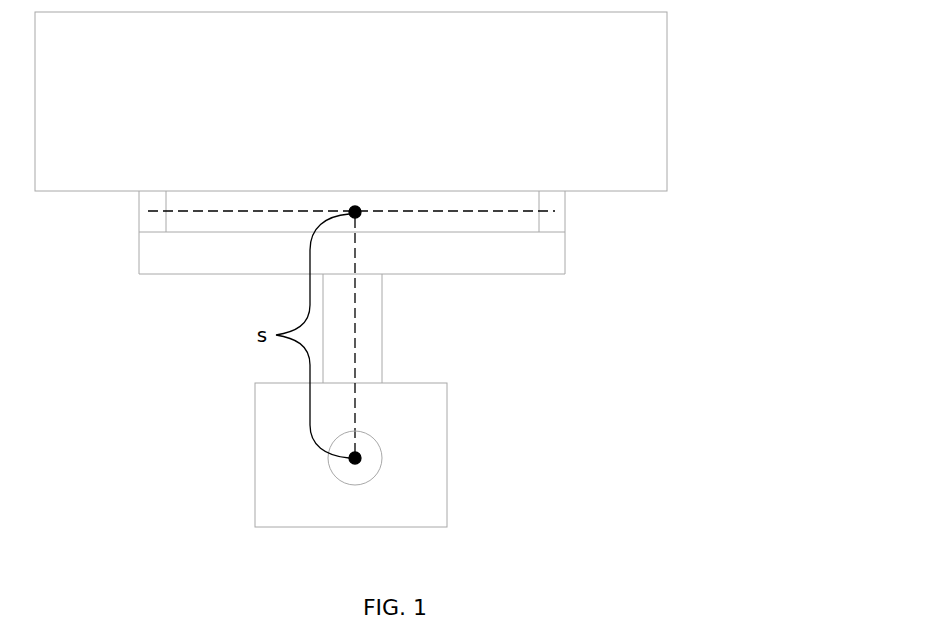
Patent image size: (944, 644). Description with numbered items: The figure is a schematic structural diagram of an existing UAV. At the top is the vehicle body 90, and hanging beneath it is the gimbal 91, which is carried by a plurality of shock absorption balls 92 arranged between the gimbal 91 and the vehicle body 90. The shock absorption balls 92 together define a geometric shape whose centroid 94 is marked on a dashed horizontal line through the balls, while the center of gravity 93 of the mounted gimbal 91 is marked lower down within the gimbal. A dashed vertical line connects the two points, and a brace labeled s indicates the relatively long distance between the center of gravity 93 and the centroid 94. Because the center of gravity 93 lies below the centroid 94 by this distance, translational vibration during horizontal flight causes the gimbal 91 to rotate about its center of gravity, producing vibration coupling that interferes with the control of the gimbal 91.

The vehicle body 90 is at (635, 115).
The gimbal 91 is at (422, 475).
The shock absorption balls 92 is at (154, 220).
The center of gravity 93 is at (355, 465).
The centroid 94 is at (355, 205).